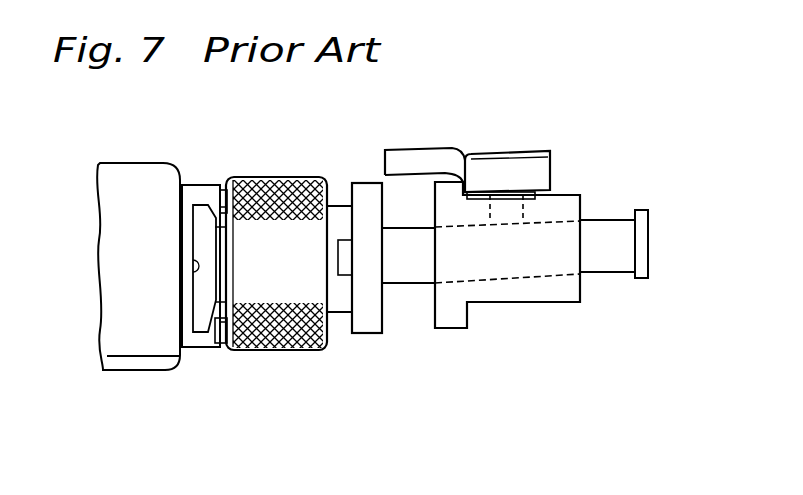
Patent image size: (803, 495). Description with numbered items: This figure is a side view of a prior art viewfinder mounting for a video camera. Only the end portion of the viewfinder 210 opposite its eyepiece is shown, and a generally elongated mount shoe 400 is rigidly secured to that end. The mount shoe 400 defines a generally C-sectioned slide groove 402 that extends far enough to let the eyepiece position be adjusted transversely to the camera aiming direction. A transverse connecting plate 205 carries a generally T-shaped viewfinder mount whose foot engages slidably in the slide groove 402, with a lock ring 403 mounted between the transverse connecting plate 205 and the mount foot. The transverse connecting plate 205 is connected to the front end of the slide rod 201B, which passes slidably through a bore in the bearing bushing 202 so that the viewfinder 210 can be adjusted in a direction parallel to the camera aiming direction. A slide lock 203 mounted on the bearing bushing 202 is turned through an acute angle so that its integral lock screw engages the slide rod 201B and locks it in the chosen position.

The viewfinder 210 is at (130, 178).
The mount shoe 400 is at (190, 185).
The slide groove 402 is at (213, 345).
The lock ring 403 is at (270, 177).
The transverse connecting plate 205 is at (370, 322).
The bearing bushing 202 is at (528, 293).
The slide lock 203 is at (505, 173).
The left slide rod 201B is at (603, 227).